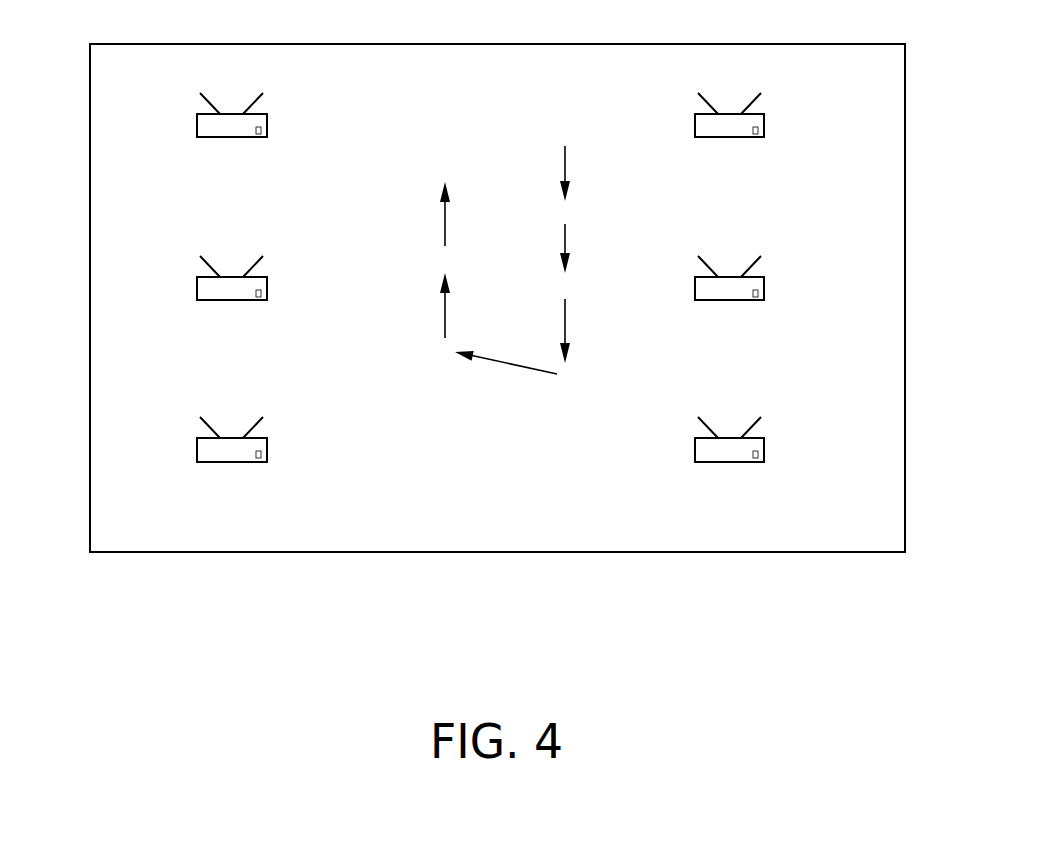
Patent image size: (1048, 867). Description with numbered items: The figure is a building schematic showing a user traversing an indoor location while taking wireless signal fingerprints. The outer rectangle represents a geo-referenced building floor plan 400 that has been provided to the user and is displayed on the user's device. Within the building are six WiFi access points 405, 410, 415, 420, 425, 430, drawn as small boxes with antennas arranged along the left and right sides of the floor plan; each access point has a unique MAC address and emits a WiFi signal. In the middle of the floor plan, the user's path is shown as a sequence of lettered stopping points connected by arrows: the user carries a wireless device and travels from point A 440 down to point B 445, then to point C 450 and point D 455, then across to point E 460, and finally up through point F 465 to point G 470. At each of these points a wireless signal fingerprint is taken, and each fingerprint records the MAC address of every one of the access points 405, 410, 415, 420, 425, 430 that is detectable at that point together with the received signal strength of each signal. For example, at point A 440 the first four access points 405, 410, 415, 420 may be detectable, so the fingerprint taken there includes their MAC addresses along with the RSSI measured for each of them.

The geo-referenced building floor plan 400 is at (905, 92).
The WiFi access point 405 is at (197, 128).
The WiFi access point 410 is at (764, 128).
The WiFi access point 415 is at (197, 291).
The WiFi access point 420 is at (764, 291).
The WiFi access point 425 is at (197, 453).
The WiFi access point 430 is at (764, 453).
The point A 440 is at (572, 131).
The point B 445 is at (573, 210).
The point C 450 is at (573, 284).
The point D 455 is at (573, 376).
The point E 460 is at (437, 345).
The point F 465 is at (437, 257).
The point G 470 is at (437, 170).